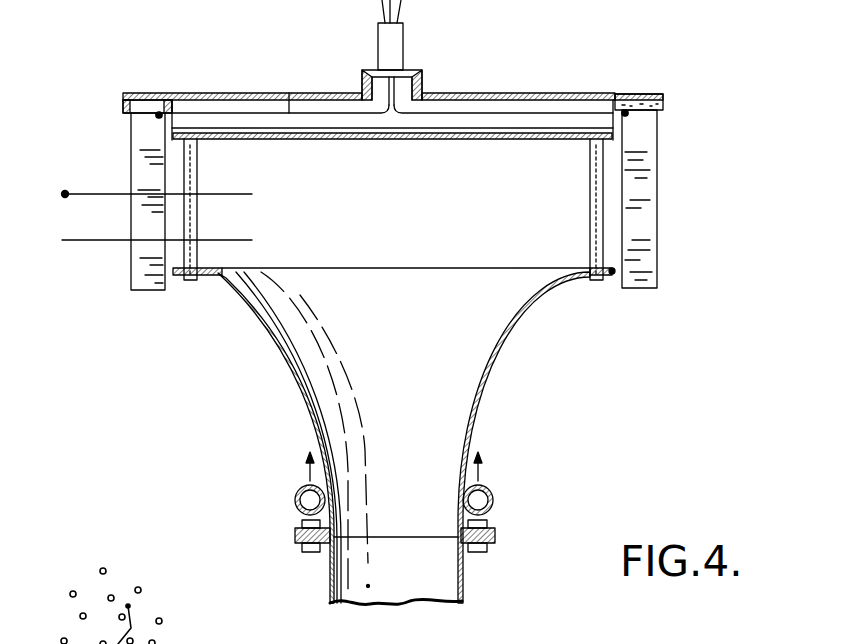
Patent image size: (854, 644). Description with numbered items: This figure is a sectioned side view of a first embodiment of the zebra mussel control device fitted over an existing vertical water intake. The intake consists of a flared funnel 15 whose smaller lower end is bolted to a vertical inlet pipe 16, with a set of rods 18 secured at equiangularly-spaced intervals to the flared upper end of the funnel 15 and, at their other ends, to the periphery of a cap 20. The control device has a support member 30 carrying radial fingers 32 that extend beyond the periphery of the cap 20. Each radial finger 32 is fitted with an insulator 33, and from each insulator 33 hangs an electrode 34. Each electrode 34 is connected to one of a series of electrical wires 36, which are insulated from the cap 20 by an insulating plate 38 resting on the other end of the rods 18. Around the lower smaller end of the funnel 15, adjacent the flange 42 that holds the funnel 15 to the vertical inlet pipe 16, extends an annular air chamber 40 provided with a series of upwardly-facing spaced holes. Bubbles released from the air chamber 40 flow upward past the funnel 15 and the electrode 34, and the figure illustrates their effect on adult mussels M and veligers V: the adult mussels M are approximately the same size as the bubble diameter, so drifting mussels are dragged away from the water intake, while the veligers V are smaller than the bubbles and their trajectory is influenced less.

The flared funnel 15 is at (468, 388).
The vertical inlet pipe 16 is at (445, 563).
The rods 18 is at (218, 273).
The cap 20 is at (205, 145).
The support member 30 is at (226, 93).
The radial fingers 32 is at (150, 93).
The insulator 33 is at (137, 112).
The electrode 34 is at (138, 251).
The electrical wires 36 is at (289, 93).
The insulating plate 38 is at (588, 158).
The annular air chamber 40 is at (488, 488).
The flange 42 is at (492, 529).
The adult mussels M is at (141, 194).
The veligers V is at (144, 243).